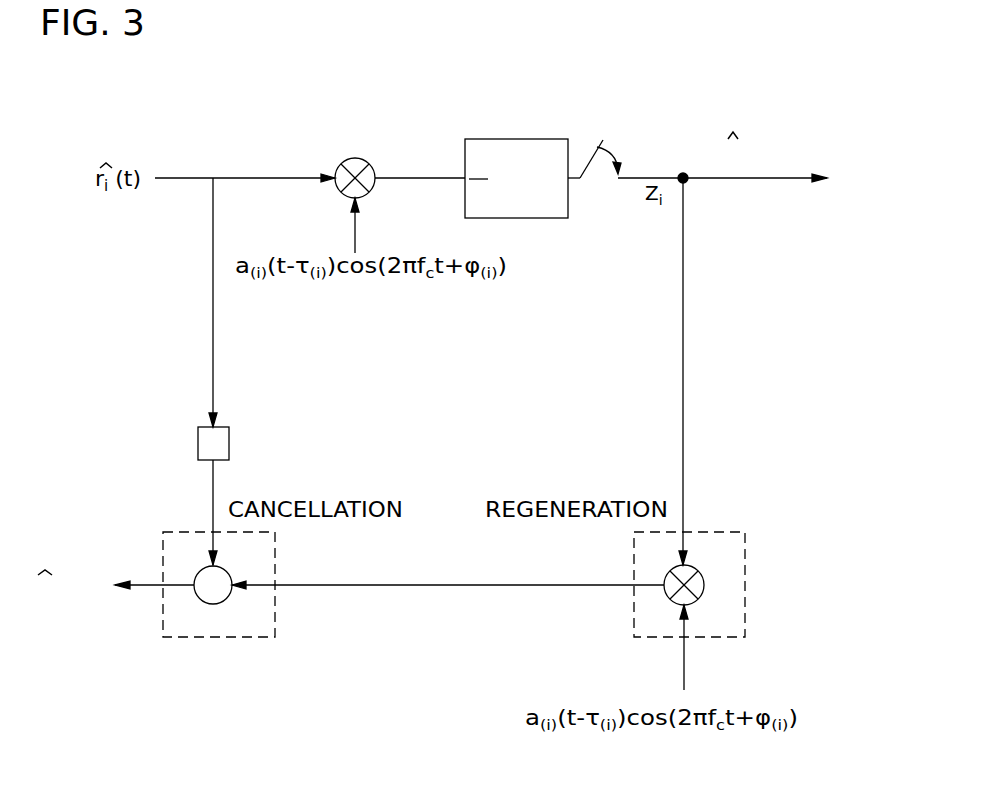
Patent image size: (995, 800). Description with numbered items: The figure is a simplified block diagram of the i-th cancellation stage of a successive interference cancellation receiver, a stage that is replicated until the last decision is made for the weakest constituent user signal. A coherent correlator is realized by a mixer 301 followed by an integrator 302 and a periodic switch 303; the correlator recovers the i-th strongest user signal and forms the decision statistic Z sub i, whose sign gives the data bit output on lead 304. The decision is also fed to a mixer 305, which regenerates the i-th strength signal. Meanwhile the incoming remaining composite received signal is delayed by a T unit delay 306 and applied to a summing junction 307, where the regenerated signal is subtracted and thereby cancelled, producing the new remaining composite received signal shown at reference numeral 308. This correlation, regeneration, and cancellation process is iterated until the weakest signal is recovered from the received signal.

The mixer 301 is at (355, 158).
The integrator 302 is at (515, 139).
The periodic switch 303 is at (592, 162).
The lead 304 is at (722, 179).
The mixer 305 is at (695, 567).
The T unit delay 306 is at (229, 443).
The summing junction 307 is at (203, 601).
The new remaining composite received signal 308 is at (147, 588).